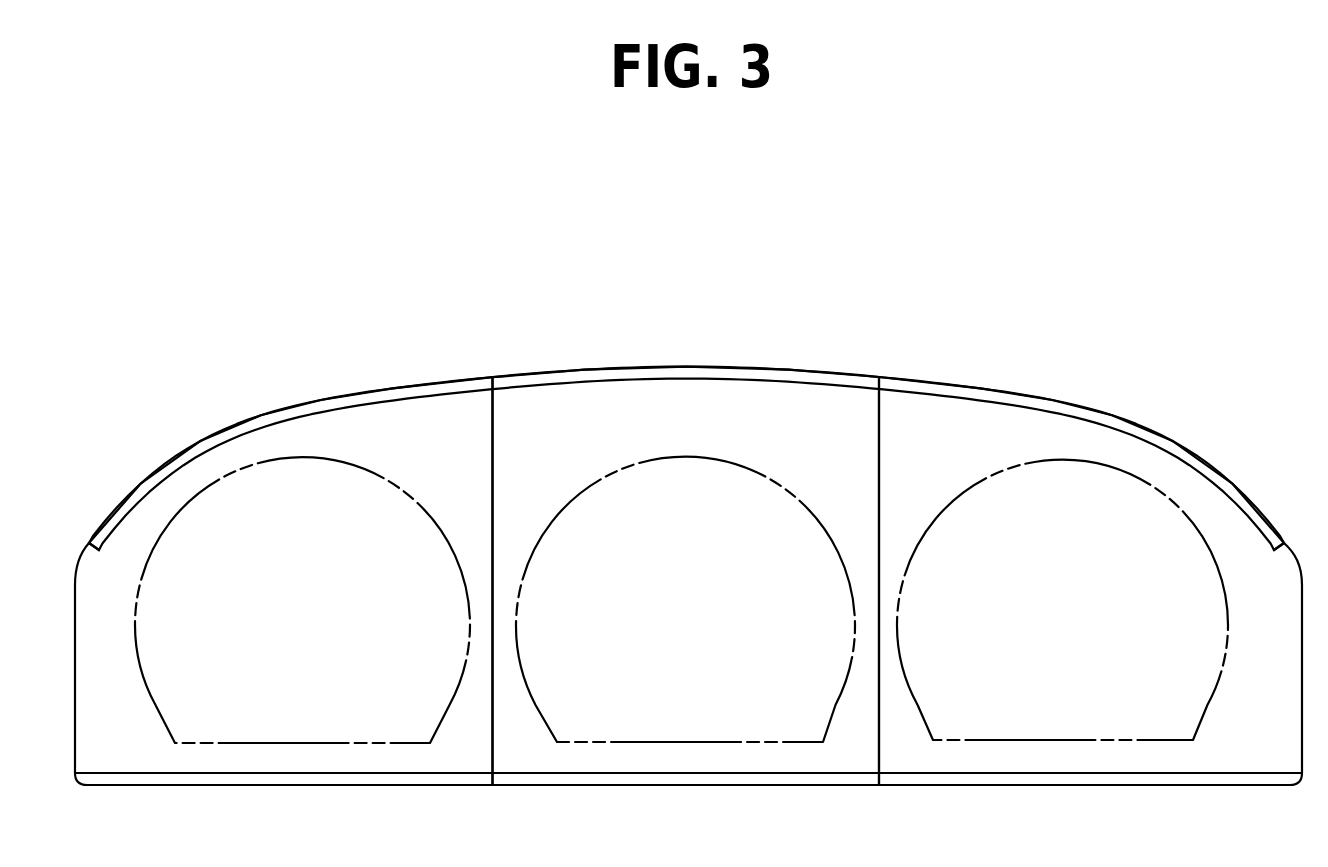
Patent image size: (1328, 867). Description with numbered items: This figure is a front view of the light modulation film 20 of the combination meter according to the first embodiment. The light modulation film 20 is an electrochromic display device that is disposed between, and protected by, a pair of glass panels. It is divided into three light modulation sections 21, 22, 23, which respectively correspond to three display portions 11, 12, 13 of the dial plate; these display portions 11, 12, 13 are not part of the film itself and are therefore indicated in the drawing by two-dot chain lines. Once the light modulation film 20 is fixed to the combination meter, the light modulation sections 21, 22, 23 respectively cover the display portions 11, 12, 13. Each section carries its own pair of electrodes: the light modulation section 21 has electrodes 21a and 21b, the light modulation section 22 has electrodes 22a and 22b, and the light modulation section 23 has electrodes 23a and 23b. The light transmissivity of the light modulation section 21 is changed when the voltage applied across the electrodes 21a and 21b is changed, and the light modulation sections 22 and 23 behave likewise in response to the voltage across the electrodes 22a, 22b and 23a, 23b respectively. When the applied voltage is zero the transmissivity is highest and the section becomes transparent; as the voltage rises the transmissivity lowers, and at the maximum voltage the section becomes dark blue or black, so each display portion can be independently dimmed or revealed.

The light modulation film 20 is at (113, 291).
The light modulation section 21 is at (686, 557).
The electrode 21a is at (740, 377).
The electrode 21b is at (689, 777).
The light modulation section 22 is at (1090, 557).
The electrode 22a is at (1127, 422).
The electrode 22b is at (1066, 783).
The light modulation section 23 is at (284, 558).
The electrode 23a is at (382, 393).
The electrode 23b is at (305, 783).
The display portion 11 is at (610, 475).
The display portion 12 is at (990, 473).
The display portion 13 is at (223, 478).